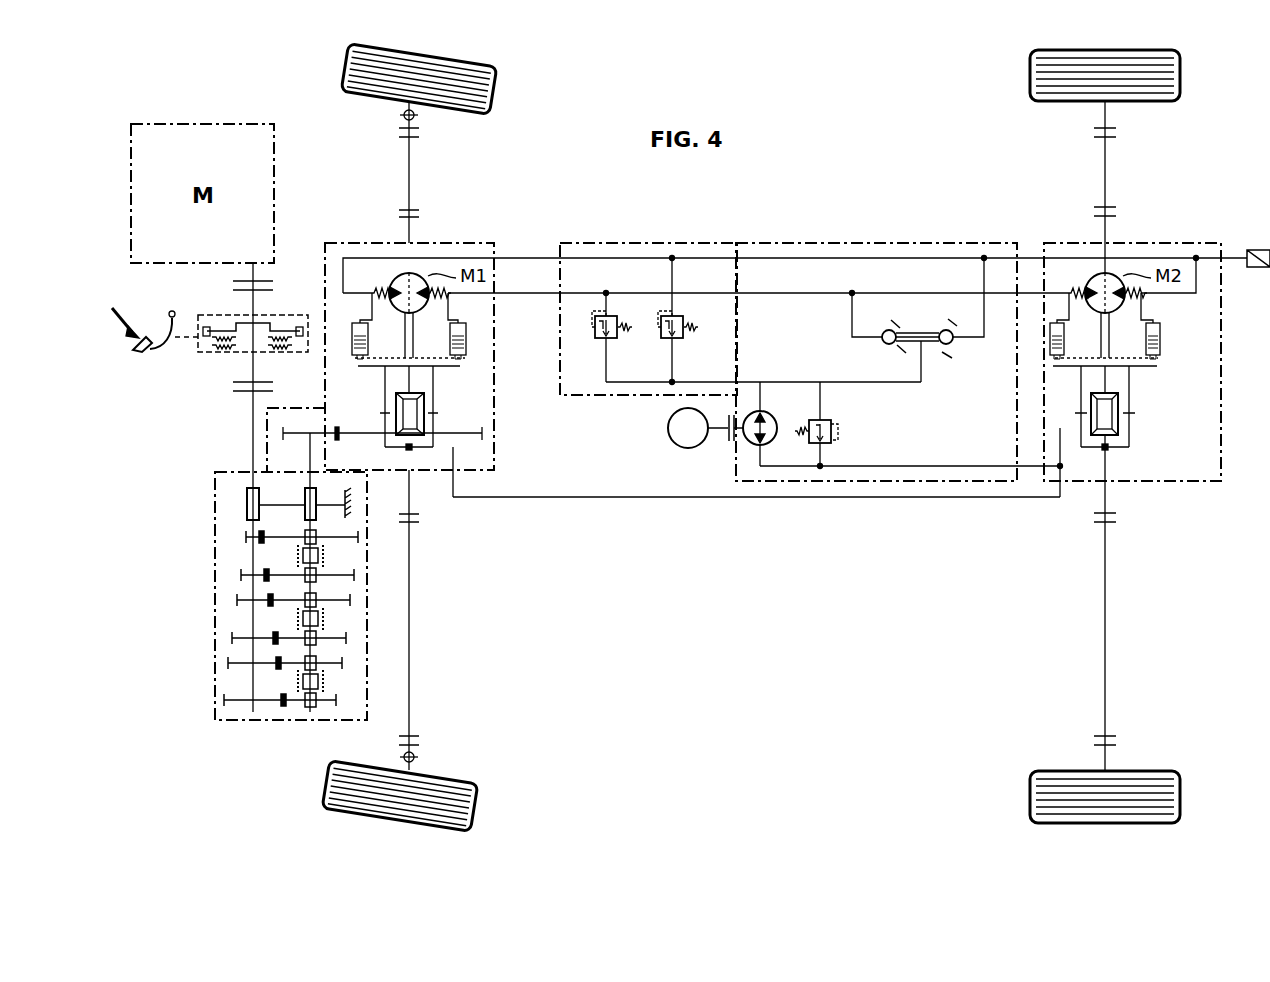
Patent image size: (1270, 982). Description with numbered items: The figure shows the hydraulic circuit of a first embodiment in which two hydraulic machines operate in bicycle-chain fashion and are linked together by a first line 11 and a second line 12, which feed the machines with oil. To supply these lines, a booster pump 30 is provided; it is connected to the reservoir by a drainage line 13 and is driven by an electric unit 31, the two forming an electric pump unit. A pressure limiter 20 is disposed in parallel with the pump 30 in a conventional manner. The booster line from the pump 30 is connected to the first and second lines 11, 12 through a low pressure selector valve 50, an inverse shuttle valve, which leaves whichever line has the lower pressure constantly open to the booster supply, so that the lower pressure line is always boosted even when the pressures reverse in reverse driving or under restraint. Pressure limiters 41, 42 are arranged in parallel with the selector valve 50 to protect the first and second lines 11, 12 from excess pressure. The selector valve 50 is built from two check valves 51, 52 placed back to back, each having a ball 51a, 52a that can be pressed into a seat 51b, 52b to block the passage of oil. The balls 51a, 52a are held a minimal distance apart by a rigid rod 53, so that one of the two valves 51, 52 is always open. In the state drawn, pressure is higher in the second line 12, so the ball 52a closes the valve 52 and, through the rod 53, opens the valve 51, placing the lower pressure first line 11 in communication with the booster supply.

The first line 11 is at (530, 296).
The second line 12 is at (533, 257).
The drainage line 13 is at (757, 500).
The pressure limiter 20 is at (832, 440).
The booster pump 30 is at (777, 420).
The electric unit 31 is at (668, 428).
The pressure limiter 41 is at (596, 336).
The pressure limiter 42 is at (663, 336).
The low pressure selector valve 50 is at (920, 349).
The check valve 51 is at (882, 347).
The ball 51a is at (880, 351).
The seat 51b is at (899, 349).
The check valve 52 is at (954, 350).
The ball 52a is at (953, 351).
The seat 52b is at (925, 352).
The rigid rod 53 is at (922, 333).